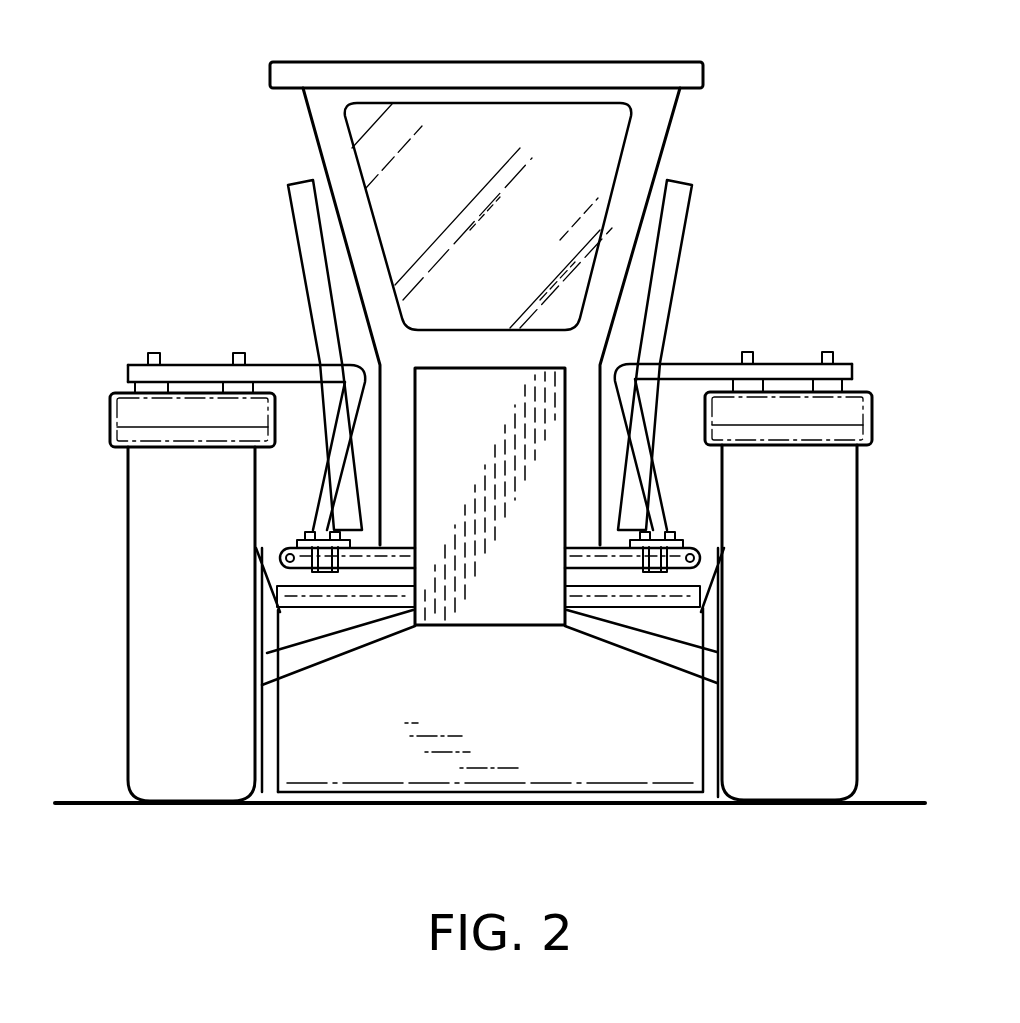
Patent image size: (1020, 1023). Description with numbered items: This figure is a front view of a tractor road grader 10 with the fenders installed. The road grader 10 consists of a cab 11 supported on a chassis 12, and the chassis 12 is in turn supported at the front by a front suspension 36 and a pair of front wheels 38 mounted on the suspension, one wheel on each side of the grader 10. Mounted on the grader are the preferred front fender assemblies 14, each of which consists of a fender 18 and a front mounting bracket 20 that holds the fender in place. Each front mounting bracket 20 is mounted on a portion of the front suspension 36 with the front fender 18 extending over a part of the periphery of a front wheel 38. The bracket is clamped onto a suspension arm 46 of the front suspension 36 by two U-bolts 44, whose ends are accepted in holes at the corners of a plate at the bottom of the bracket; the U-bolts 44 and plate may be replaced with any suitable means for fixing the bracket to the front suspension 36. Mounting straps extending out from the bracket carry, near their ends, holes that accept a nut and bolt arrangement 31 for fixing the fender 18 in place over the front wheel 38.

The road grader 10 is at (769, 87).
The cab 11 is at (323, 57).
The chassis 12 is at (450, 374).
The front fender assembly 14 is at (133, 351).
The fender 18 is at (121, 419).
The front mounting bracket 20 is at (284, 361).
The nut and bolt arrangement 31 is at (237, 351).
The front suspension 36 is at (368, 617).
The front wheel 38 is at (183, 780).
The U-bolt 44 is at (302, 527).
The suspension arm 46 is at (394, 544).